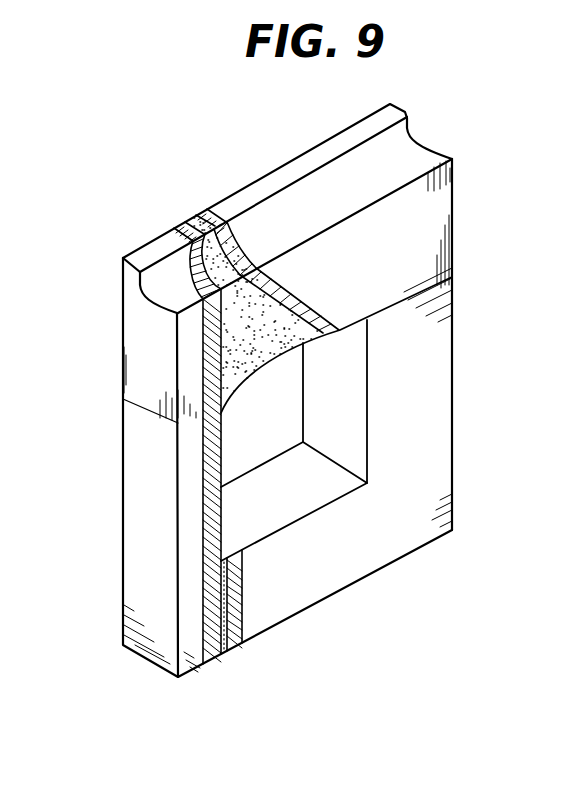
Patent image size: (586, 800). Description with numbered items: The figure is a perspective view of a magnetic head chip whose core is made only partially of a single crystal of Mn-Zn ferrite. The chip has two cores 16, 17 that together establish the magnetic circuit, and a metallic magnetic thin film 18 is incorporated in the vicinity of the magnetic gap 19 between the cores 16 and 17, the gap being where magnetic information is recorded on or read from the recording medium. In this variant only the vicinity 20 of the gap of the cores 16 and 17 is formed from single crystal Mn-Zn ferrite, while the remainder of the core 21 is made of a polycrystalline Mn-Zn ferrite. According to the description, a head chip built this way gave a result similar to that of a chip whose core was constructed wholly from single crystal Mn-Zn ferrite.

The core 16 is at (119, 513).
The core 17 is at (455, 305).
The metallic magnetic thin film 18 is at (178, 227).
The magnetic gap 19 is at (183, 227).
The vicinity of the gap 20 is at (440, 205).
The remainder of the core 21 is at (440, 405).